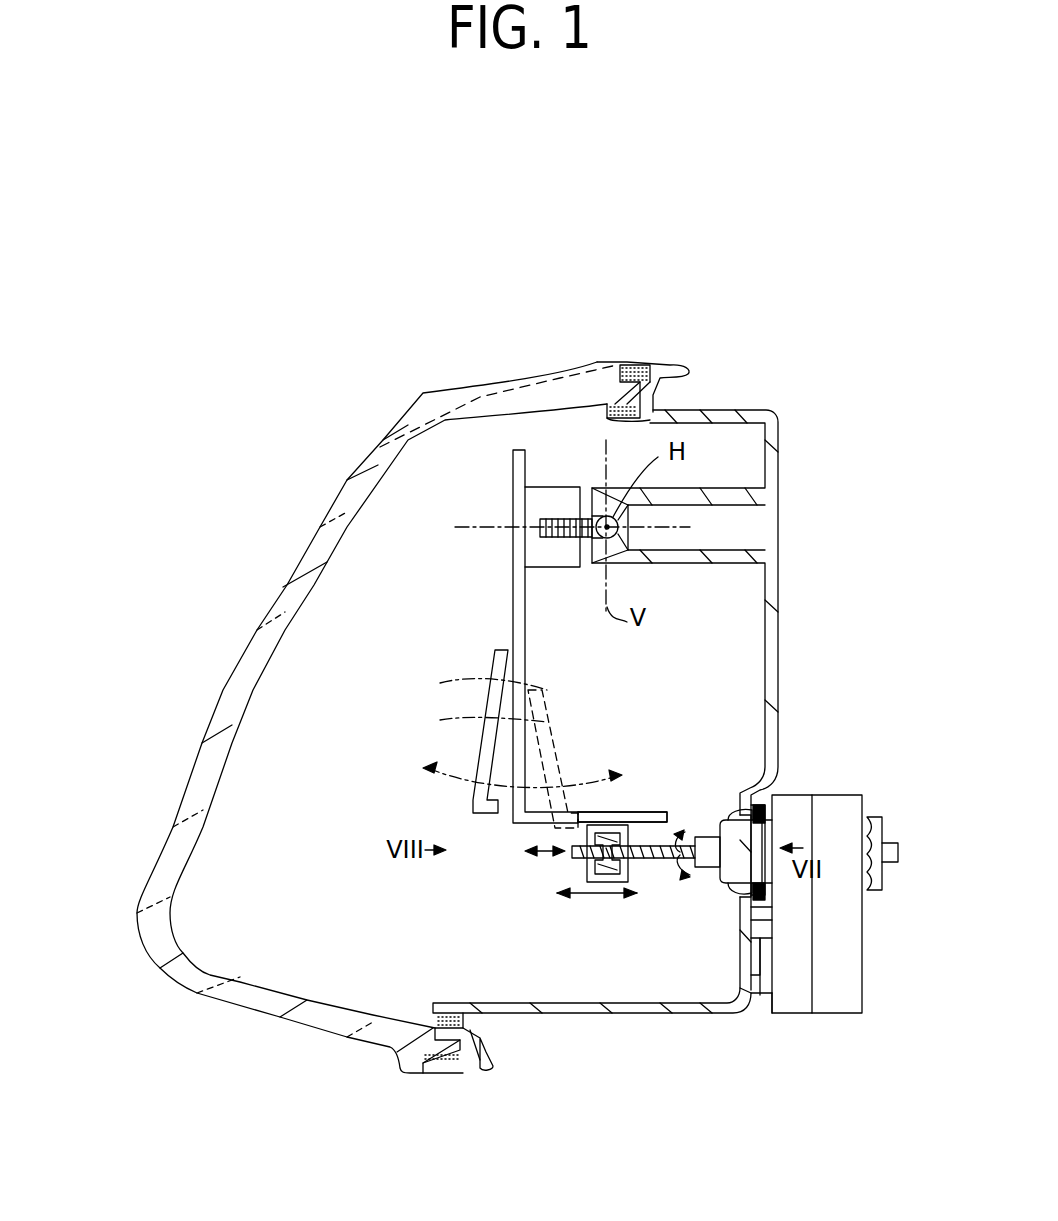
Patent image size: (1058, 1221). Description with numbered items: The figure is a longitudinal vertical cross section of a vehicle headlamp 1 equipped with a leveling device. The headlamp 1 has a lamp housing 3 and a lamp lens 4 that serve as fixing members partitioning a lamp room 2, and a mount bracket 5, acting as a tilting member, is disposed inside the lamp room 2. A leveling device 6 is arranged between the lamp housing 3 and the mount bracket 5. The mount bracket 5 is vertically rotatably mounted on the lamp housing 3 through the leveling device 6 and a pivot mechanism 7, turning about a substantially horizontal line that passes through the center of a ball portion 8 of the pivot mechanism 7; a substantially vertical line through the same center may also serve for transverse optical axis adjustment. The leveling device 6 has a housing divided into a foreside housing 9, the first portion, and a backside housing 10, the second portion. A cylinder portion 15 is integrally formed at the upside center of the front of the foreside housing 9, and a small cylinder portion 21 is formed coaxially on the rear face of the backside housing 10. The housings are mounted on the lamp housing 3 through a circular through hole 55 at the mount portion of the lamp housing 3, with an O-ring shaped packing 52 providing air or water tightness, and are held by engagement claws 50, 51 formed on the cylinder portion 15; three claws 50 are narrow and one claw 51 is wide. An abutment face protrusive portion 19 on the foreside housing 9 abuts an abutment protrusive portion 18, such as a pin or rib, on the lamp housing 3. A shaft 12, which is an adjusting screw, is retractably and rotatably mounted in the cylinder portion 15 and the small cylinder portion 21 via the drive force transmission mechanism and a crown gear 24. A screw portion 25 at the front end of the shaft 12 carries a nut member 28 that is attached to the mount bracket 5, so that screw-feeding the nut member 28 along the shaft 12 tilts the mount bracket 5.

The vehicle headlamp 1 is at (343, 467).
The lamp room 2 is at (360, 645).
The lamp housing 3 is at (755, 410).
The lamp lens 4 is at (320, 525).
The mount bracket 5 is at (440, 713).
The leveling device 6 is at (776, 1016).
The pivot mechanism 7 is at (587, 478).
The ball portion 8 is at (627, 553).
The foreside housing 9 is at (800, 1013).
The backside housing 10 is at (843, 1013).
The shaft 12 is at (652, 862).
The cylinder portion 15 is at (727, 830).
The abutment protrusive portion 18 is at (745, 952).
The abutment face protrusive portion 19 is at (747, 1000).
The small cylinder portion 21 is at (877, 875).
The crown gear 24 is at (877, 815).
The screw portion 25 is at (577, 860).
The nut member 28 is at (587, 870).
The engagement claw 50 is at (735, 812).
The engagement claw 51 is at (728, 887).
The packing 52 is at (772, 790).
The circular through hole 55 is at (767, 822).